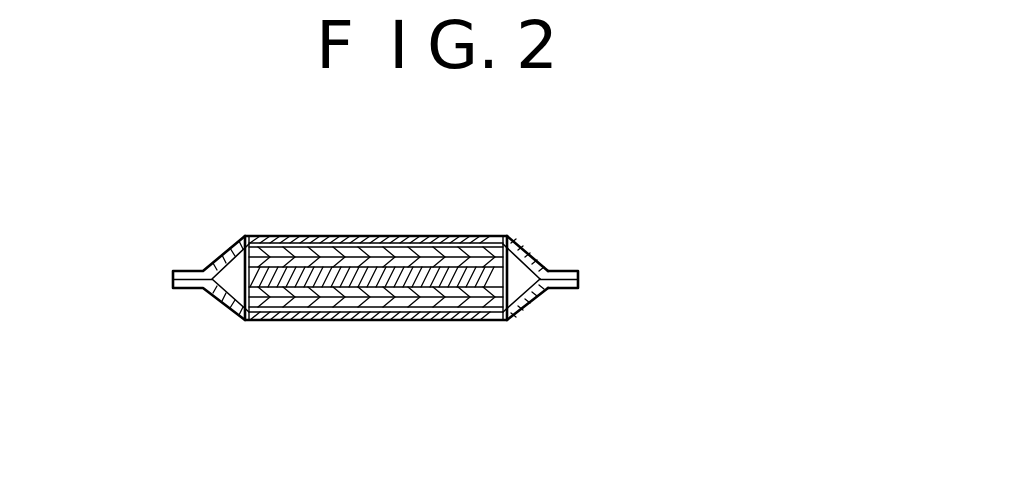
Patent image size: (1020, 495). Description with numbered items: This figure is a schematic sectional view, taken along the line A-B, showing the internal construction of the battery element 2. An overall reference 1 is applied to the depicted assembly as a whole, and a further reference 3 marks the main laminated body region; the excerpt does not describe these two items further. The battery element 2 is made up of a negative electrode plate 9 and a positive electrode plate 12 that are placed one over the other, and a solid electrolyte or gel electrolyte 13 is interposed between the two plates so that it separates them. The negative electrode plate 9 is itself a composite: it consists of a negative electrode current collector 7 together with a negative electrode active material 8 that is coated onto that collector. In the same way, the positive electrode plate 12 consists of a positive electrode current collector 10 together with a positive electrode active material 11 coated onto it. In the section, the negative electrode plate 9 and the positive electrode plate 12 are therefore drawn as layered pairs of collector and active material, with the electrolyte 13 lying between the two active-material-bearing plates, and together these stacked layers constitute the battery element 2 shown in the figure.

The electronic component 1 is at (186, 209).
The battery element 2 is at (716, 142).
The laminated body 3 is at (375, 322).
The negative electrode current collector 7 is at (509, 243).
The negative electrode active material 8 is at (506, 275).
The negative electrode plate 9 is at (644, 142).
The positive electrode current collector 10 is at (508, 315).
The positive electrode active material 11 is at (512, 306).
The positive electrode plate 12 is at (644, 328).
The solid electrolyte or gel electrolyte 13 is at (547, 267).